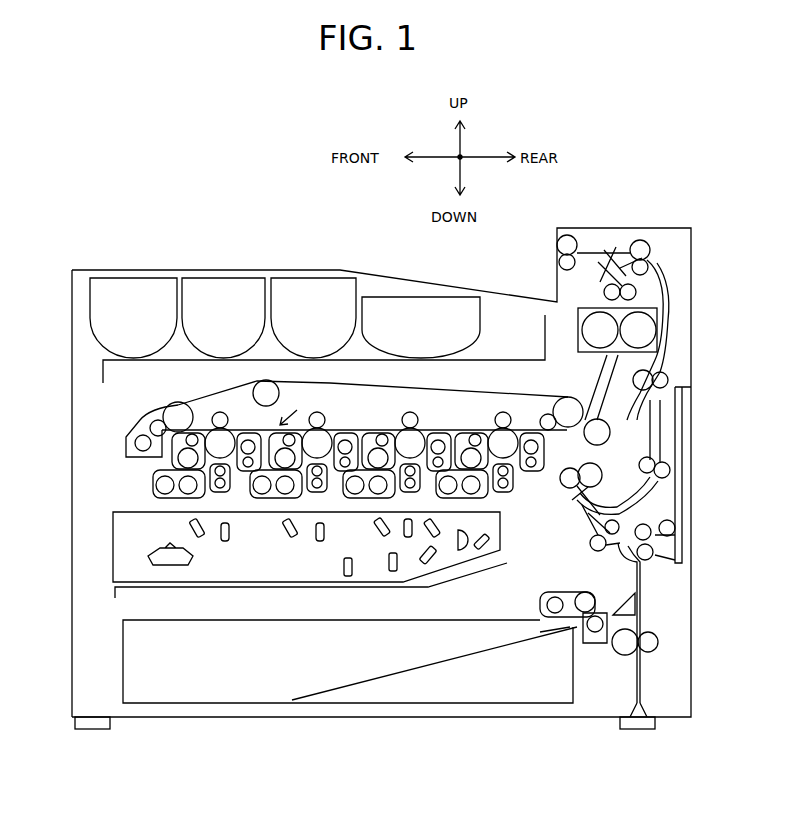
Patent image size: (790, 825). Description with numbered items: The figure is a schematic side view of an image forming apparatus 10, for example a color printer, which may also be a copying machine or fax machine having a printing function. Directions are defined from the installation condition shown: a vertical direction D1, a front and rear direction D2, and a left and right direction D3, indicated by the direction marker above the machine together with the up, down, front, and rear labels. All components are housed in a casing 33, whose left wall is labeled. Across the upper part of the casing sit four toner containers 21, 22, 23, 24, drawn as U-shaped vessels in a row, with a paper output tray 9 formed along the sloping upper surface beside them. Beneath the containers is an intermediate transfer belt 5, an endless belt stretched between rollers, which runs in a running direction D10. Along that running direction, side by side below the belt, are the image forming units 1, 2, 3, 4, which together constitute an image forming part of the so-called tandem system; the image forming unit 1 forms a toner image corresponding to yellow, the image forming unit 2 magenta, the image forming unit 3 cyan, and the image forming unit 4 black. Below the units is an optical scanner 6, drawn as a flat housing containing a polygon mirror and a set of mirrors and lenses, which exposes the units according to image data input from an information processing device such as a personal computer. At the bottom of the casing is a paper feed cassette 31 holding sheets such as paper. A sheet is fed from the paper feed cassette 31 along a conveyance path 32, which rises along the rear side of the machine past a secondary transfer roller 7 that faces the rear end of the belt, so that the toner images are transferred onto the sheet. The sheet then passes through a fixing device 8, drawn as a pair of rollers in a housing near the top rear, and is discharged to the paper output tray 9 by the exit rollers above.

The image forming apparatus 10 is at (120, 220).
The toner container 21 is at (108, 270).
The toner container 22 is at (197, 270).
The toner container 23 is at (283, 270).
The toner container 24 is at (449, 293).
The paper output tray 9 is at (494, 293).
The fixing device 8 is at (657, 317).
The intermediate transfer belt 5 is at (198, 398).
The image forming unit 1 is at (239, 414).
The image forming unit 2 is at (340, 424).
The image forming unit 3 is at (431, 424).
The image forming unit 4 is at (523, 419).
The optical scanner 6 is at (113, 531).
The secondary transfer roller 7 is at (605, 447).
The paper feed cassette 31 is at (123, 660).
The conveyance path 32 is at (582, 528).
The casing 33 is at (72, 448).
The vertical direction D1 is at (463, 138).
The front and rear direction D2 is at (441, 166).
The left and right direction D3 is at (458, 155).
The running direction D10 is at (300, 409).